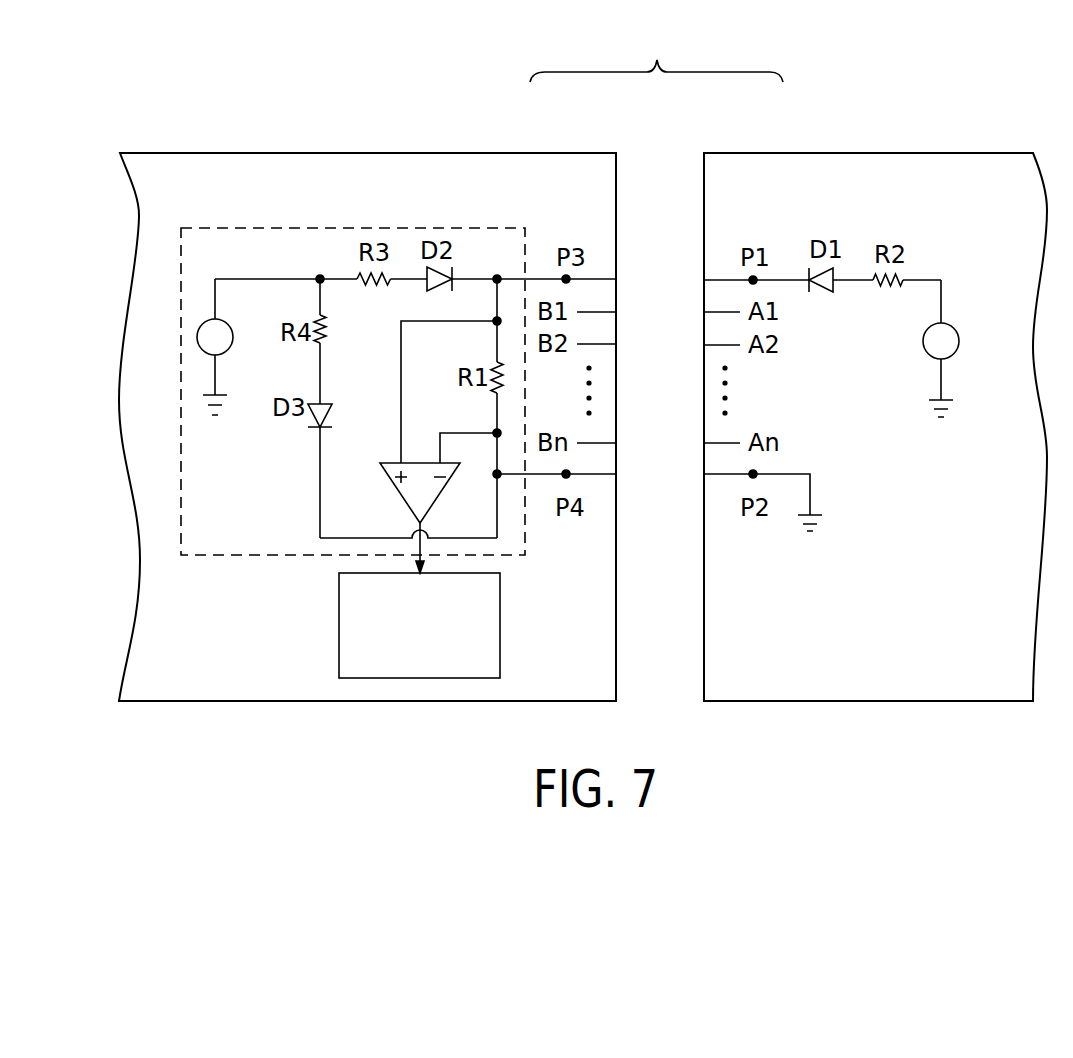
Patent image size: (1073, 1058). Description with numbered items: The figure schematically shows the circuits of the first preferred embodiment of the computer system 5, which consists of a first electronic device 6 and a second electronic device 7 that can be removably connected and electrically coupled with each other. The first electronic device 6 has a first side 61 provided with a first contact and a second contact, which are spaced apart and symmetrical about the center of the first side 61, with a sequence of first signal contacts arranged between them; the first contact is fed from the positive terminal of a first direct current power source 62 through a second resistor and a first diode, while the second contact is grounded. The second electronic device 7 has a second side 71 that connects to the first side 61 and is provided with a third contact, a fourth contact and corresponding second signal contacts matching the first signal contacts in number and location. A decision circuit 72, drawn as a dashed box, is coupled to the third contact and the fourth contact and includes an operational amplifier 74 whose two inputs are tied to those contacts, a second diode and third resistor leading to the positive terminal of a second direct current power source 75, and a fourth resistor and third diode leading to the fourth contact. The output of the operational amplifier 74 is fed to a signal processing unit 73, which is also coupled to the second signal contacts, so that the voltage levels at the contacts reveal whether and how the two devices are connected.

The computer system 5 is at (657, 60).
The first electronic device 6 is at (780, 152).
The first side 61 is at (704, 167).
The first direct current power source 62 is at (959, 338).
The second electronic device 7 is at (540, 152).
The second side 71 is at (618, 167).
The decision circuit 72 is at (405, 228).
The signal processing unit 73 is at (339, 602).
The operational amplifier 74 is at (399, 492).
The second direct current power source 75 is at (233, 336).